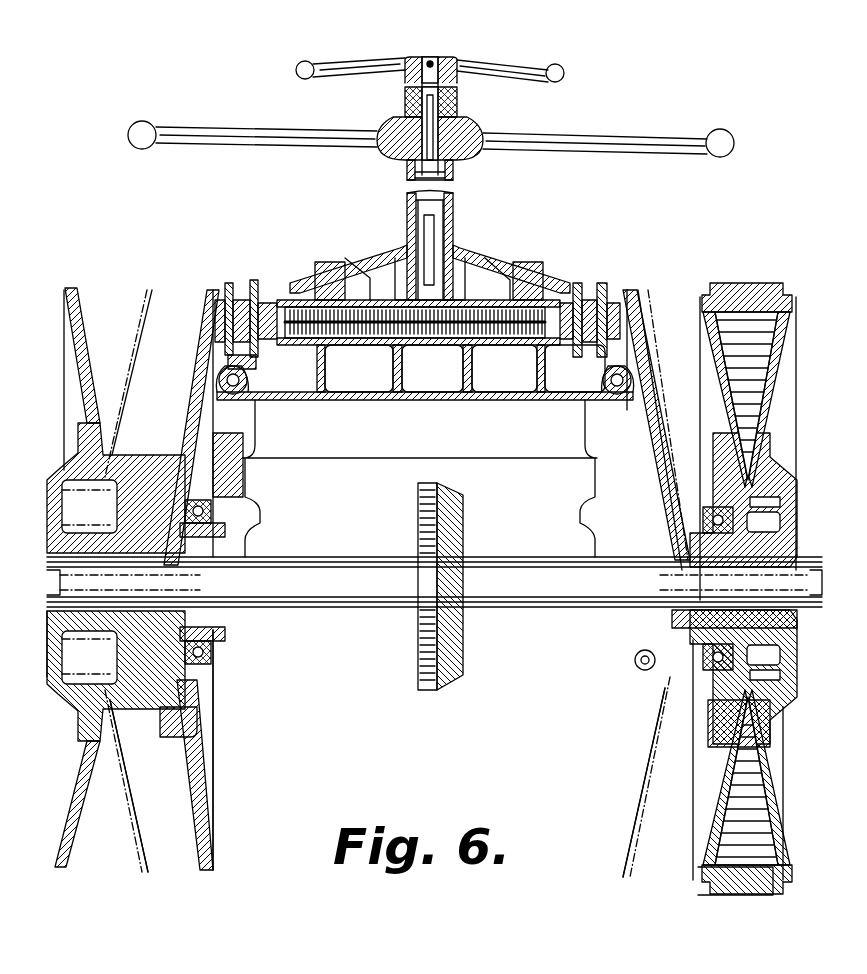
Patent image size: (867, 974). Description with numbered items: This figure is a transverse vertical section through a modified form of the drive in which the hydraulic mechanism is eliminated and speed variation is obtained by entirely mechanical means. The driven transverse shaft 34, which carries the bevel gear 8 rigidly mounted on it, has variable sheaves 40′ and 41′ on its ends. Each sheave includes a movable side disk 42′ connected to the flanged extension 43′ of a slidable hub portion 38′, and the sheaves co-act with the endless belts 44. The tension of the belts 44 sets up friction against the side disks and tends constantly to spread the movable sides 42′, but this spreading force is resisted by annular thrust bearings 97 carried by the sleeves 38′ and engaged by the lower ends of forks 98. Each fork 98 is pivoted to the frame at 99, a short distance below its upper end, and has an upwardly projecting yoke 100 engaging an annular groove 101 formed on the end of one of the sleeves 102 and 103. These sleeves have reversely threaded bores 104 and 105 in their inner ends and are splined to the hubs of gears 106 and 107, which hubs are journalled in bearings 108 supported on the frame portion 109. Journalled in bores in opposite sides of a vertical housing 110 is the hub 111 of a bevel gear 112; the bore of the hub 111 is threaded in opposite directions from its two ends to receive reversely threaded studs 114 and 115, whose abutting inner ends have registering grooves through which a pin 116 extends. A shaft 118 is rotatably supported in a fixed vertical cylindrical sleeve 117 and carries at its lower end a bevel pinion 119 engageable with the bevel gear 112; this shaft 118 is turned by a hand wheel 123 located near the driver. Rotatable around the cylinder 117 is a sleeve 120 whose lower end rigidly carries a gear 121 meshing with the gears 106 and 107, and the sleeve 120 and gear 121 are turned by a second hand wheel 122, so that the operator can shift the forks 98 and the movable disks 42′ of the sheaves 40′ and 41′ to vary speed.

The hand wheel 123 is at (508, 68).
The hand wheel 122 is at (613, 138).
The sleeve 120 is at (462, 128).
The shaft 118 is at (400, 176).
The fixed vertical cylindrical sleeve 117 is at (450, 178).
The gear 121 is at (468, 290).
The bevel pinion 119 is at (410, 268).
The gear 106 is at (336, 262).
The gear 107 is at (535, 265).
The sleeve 103 is at (498, 283).
The sleeve 102 is at (300, 282).
The reversely threaded stud 114 is at (385, 302).
The yoke 100 is at (218, 305).
The annular groove 101 is at (240, 283).
The threaded bore 104 is at (272, 292).
The threaded bore 105 is at (565, 300).
The bearing 108 is at (594, 290).
The frame portion 109 is at (430, 400).
The fork pivot 99 is at (220, 372).
The vertical housing 110 is at (390, 370).
The pin 116 is at (392, 352).
The hub 111 is at (424, 348).
The bevel gear 112 is at (460, 350).
The reversely threaded stud 115 is at (502, 350).
The fork 98 is at (250, 460).
The annular thrust bearing 97 is at (212, 508).
The shaft 34 is at (388, 610).
The bevel gear 8 is at (420, 688).
The endless belt 44 is at (750, 285).
The slidable hub portion 38′ is at (222, 637).
The flanged extension 43′ is at (200, 685).
The variable sheave 40′ is at (213, 763).
The movable side disk 42′ is at (213, 833).
The variable sheave 41′ is at (690, 845).